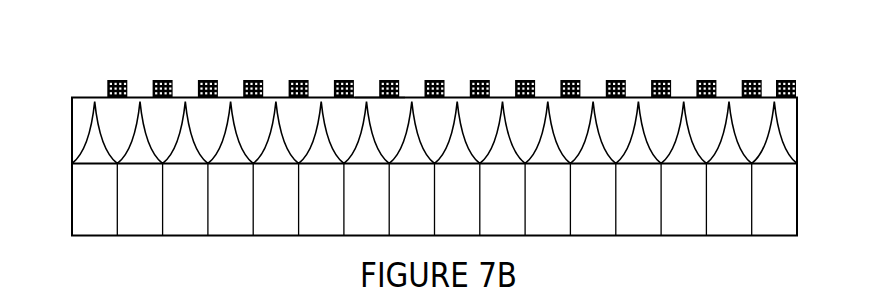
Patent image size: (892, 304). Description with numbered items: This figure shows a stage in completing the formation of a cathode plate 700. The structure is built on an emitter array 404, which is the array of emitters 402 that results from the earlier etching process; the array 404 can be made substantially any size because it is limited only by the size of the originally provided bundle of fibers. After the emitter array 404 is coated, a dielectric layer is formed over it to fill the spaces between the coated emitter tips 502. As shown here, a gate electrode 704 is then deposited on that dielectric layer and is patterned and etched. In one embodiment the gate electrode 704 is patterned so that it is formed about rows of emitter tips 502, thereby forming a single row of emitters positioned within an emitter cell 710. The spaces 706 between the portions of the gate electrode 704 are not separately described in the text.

The cathode plate 700 is at (807, 164).
The emitter 402 is at (796, 197).
The coated emitter tip 502 is at (774, 112).
The gate electrode 704 is at (112, 80).
The gaps between pads 706 is at (722, 84).
The emitter cell 710 is at (379, 76).
The emitter array 404 is at (63, 207).